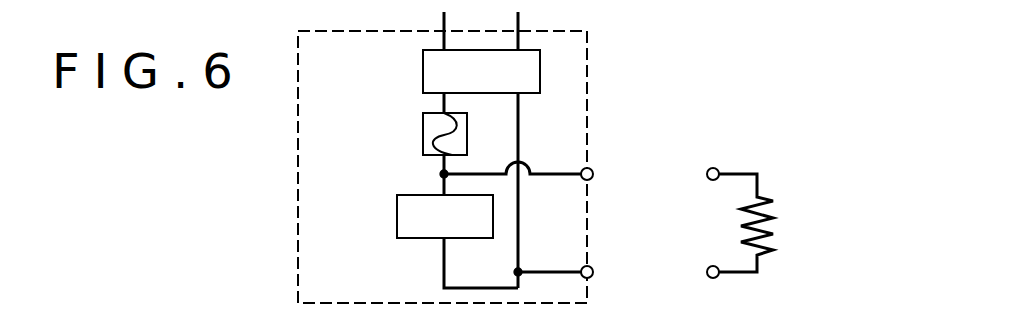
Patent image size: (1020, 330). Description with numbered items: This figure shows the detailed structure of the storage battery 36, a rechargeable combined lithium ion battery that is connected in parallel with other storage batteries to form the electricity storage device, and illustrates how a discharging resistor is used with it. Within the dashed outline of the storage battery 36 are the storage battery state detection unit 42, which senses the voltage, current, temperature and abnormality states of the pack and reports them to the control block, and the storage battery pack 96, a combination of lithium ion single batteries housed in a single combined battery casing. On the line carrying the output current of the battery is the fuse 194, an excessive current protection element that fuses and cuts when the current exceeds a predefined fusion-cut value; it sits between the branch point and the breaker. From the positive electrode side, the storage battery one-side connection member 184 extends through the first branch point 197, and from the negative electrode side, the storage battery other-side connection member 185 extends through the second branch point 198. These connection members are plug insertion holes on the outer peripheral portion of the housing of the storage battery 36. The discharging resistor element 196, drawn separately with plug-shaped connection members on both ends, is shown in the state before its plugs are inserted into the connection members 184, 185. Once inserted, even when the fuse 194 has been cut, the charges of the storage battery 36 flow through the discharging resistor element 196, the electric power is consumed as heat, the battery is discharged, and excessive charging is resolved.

The storage battery 36 is at (296, 155).
The storage battery state detection unit 42 is at (423, 72).
The fuse 194 is at (423, 133).
The first branch point 197 is at (444, 174).
The storage battery pack 96 is at (397, 218).
The second branch point 198 is at (520, 270).
The storage battery one-side connection member 184 is at (594, 176).
The storage battery other-side connection member 185 is at (594, 274).
The discharging resistor element 196 is at (780, 225).